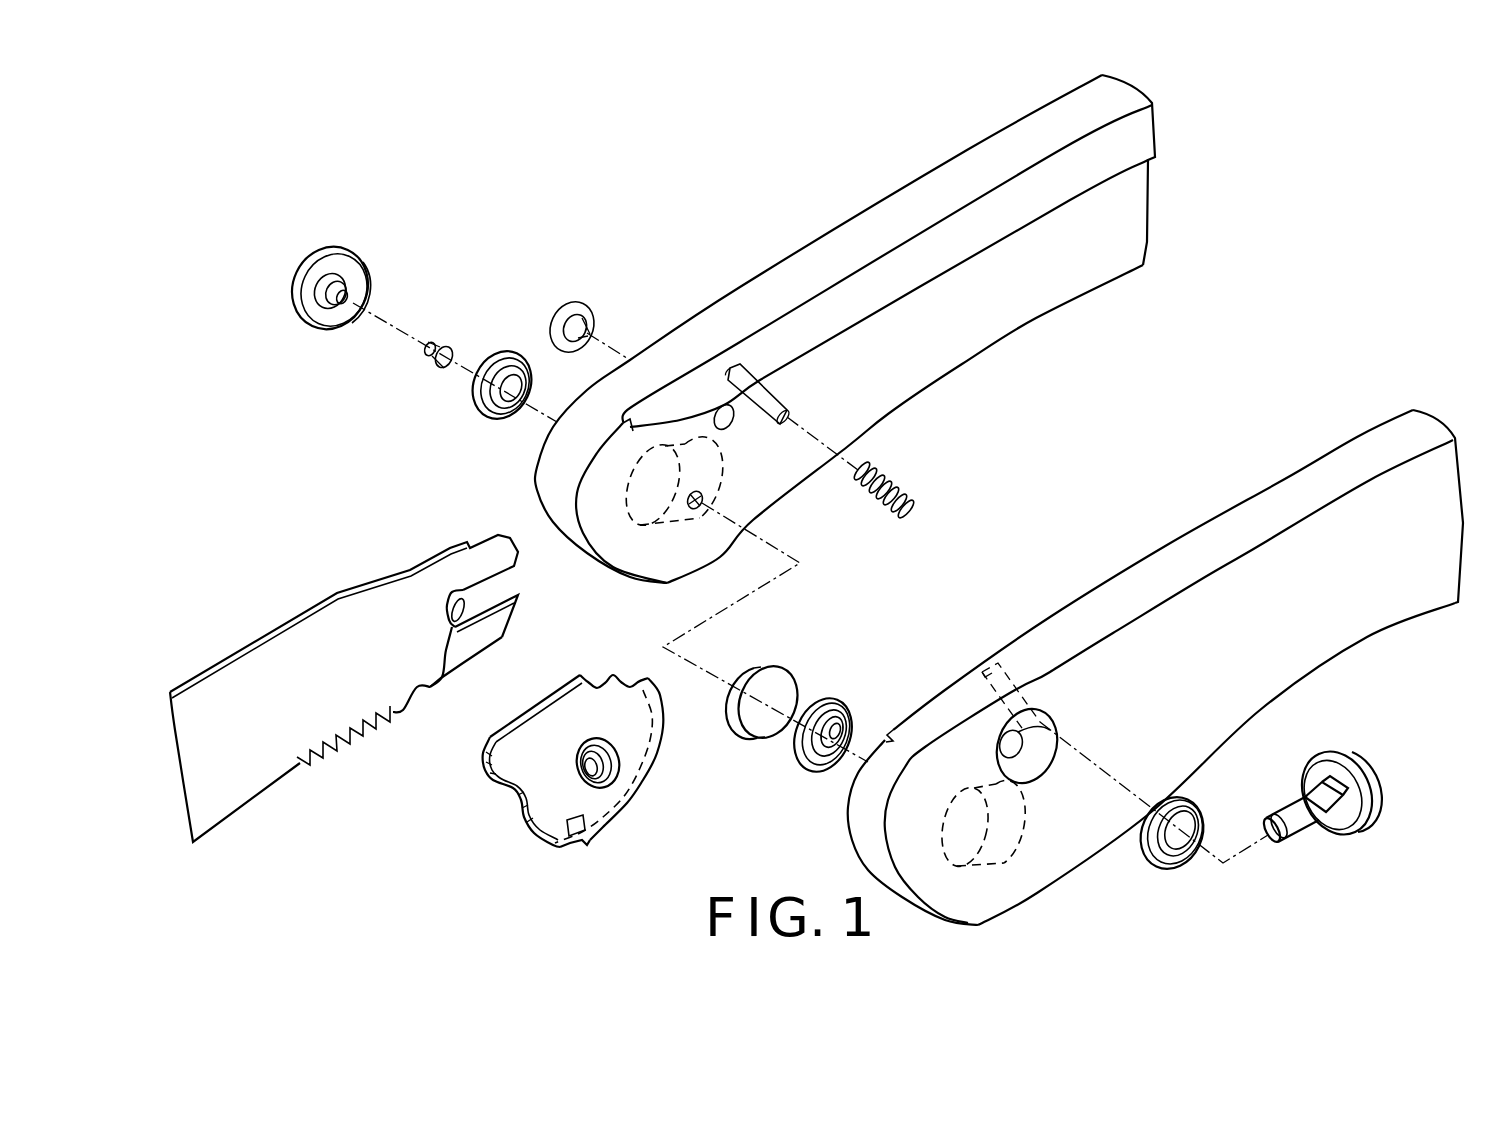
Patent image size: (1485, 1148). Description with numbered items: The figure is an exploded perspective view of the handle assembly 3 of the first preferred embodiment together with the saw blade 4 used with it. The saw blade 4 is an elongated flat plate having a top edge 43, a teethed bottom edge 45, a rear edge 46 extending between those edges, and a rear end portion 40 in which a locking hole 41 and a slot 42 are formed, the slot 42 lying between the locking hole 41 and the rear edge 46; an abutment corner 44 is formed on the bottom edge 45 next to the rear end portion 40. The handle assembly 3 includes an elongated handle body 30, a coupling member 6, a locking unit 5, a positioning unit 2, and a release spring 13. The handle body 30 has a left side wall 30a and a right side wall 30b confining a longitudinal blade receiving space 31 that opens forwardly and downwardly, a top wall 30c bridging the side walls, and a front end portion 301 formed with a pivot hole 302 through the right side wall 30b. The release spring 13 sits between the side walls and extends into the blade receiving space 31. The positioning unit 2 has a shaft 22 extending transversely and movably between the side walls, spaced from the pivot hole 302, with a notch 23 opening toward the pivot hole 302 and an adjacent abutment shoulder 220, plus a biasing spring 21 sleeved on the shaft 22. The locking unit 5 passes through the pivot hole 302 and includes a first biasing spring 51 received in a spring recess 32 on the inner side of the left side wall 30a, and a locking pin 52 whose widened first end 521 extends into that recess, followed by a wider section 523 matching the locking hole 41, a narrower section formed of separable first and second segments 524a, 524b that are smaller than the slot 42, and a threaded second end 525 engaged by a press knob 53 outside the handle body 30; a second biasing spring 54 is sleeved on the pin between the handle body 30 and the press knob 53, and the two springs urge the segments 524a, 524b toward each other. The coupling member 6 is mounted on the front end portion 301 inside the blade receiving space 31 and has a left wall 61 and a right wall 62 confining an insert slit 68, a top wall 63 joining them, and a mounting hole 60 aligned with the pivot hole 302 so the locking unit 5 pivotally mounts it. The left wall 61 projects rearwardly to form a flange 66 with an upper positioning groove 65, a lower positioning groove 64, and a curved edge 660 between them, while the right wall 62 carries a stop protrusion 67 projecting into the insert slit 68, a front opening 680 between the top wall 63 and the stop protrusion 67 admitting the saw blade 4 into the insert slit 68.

The positioning unit 2 is at (1257, 804).
The handle assembly 3 is at (891, 418).
The saw blade 4 is at (370, 659).
The locking unit 5 is at (413, 310).
The coupling member 6 is at (551, 765).
The release spring 13 is at (907, 500).
The biasing spring 21 is at (1170, 873).
The shaft 22 is at (1297, 827).
The notch 23 is at (1317, 817).
The handle body 30 is at (1157, 631).
The left side wall 30a is at (1410, 570).
The right side wall 30b is at (1033, 290).
The top wall 30c is at (888, 208).
The blade receiving space 31 is at (677, 430).
The spring recess 32 is at (1007, 853).
The rear end portion 40 is at (480, 610).
The locking hole 41 is at (453, 630).
The slot 42 is at (510, 585).
The top edge 43 is at (370, 582).
The abutment corner 44 is at (465, 662).
The teethed bottom edge 45 is at (357, 750).
The rear edge 46 is at (505, 535).
The first biasing spring 51 is at (803, 767).
The locking pin 52 is at (779, 687).
The press knob 53 is at (335, 248).
The second biasing spring 54 is at (502, 352).
The mounting hole 60 is at (603, 773).
The left wall 61 is at (540, 810).
The right wall 62 is at (503, 787).
The top wall 63 is at (507, 727).
The lower positioning groove 64 is at (580, 843).
The upper positioning groove 65 is at (630, 680).
The flange 66 is at (640, 787).
The stop protrusion 67 is at (557, 840).
The insert slit 68 is at (477, 753).
The abutment shoulder 220 is at (1320, 813).
The front end portion 301 is at (630, 525).
The pivot hole 302 is at (697, 510).
The first end 521 is at (777, 690).
The wider section 523 is at (757, 667).
The first segment 524a is at (723, 700).
The second segment 524b is at (437, 367).
The threaded second end 525 is at (432, 333).
The curved edge 660 is at (663, 737).
The front opening 680 is at (503, 800).